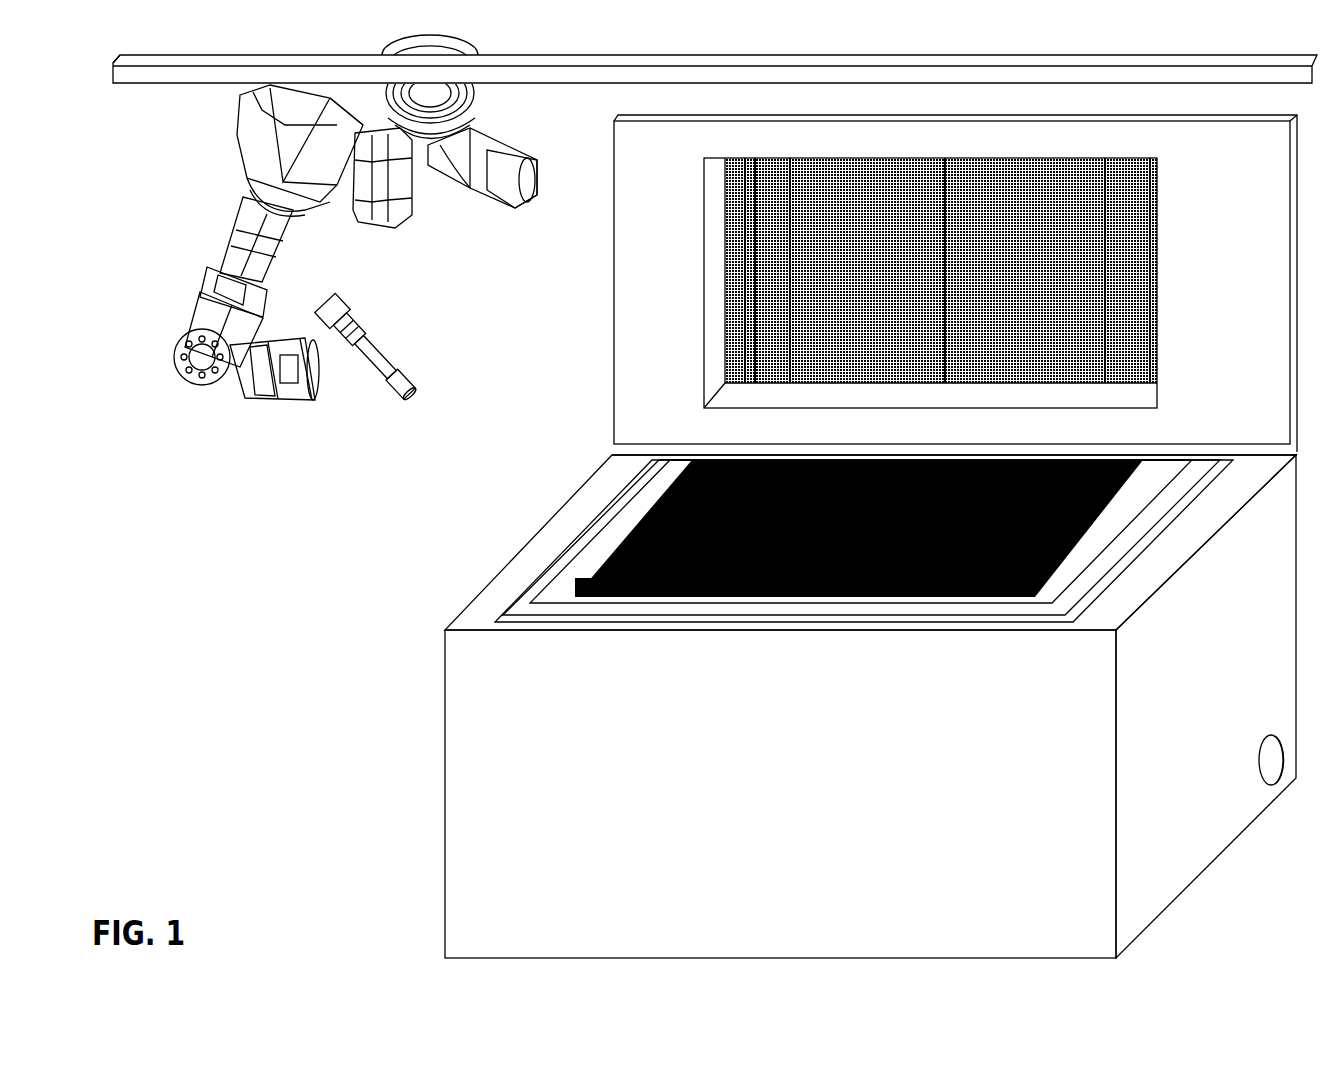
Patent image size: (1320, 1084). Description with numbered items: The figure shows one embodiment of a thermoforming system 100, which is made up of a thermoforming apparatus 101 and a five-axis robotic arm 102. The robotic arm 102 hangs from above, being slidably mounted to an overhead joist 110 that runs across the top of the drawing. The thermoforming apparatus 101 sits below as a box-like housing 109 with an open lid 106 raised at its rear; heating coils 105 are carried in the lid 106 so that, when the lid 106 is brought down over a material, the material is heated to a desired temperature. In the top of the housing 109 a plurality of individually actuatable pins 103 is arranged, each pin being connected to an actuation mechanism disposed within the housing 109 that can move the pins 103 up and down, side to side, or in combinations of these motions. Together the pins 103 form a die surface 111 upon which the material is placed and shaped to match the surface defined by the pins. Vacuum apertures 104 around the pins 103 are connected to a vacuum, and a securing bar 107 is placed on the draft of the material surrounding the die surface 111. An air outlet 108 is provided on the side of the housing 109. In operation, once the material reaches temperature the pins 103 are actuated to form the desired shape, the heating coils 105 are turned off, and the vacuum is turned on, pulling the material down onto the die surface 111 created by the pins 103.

The thermoforming system 100 is at (222, 501).
The thermoforming apparatus 101 is at (430, 537).
The five-axis robotic arm 102 is at (178, 279).
The individually actuatable pins 103 is at (866, 508).
The vacuum apertures 104 is at (1062, 578).
The heating coils 105 is at (755, 317).
The lid 106 is at (954, 285).
The securing bar 107 is at (527, 585).
The air outlet 108 is at (1259, 763).
The housing 109 is at (815, 807).
The overhead joist 110 is at (186, 84).
The die surface 111 is at (1040, 487).